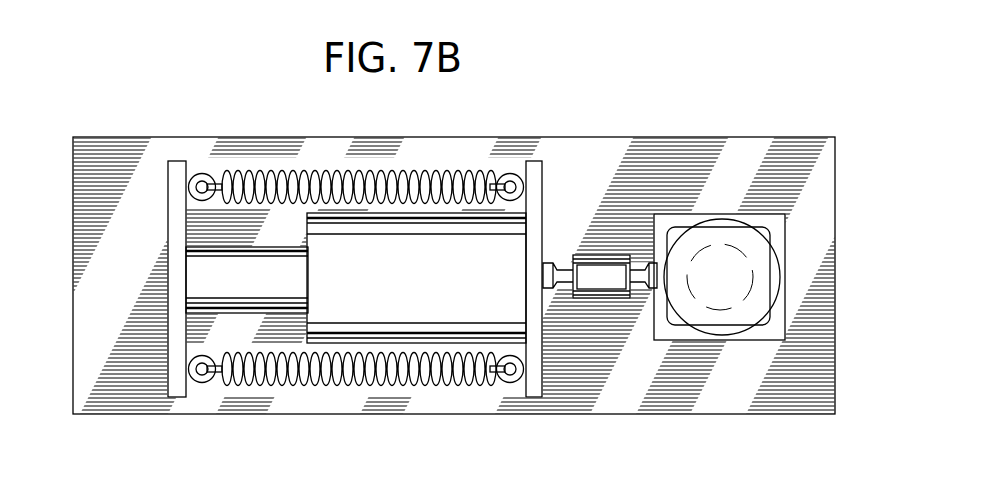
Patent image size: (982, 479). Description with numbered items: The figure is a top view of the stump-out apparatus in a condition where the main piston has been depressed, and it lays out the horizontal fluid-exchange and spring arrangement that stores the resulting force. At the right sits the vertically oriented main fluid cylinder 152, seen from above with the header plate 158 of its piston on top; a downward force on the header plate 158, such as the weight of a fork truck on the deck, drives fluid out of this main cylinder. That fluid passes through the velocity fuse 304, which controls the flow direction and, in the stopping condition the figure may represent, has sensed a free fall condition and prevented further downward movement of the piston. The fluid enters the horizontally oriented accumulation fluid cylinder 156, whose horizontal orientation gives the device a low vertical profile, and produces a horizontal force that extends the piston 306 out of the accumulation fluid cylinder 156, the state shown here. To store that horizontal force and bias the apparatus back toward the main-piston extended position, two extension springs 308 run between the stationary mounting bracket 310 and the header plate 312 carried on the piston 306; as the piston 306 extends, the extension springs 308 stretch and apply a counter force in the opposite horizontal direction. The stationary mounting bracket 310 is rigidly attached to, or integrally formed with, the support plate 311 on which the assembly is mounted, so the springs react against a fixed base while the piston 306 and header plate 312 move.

The support plate 311 is at (580, 415).
The header plate 312 is at (176, 161).
The stationary mounting bracket 310 is at (543, 182).
The extension springs 308 is at (437, 170).
The piston 306 is at (261, 286).
The accumulation fluid cylinder 156 is at (428, 285).
The velocity fuse 304 is at (608, 254).
The main fluid cylinder 152 is at (738, 340).
The header plate 158 is at (773, 237).